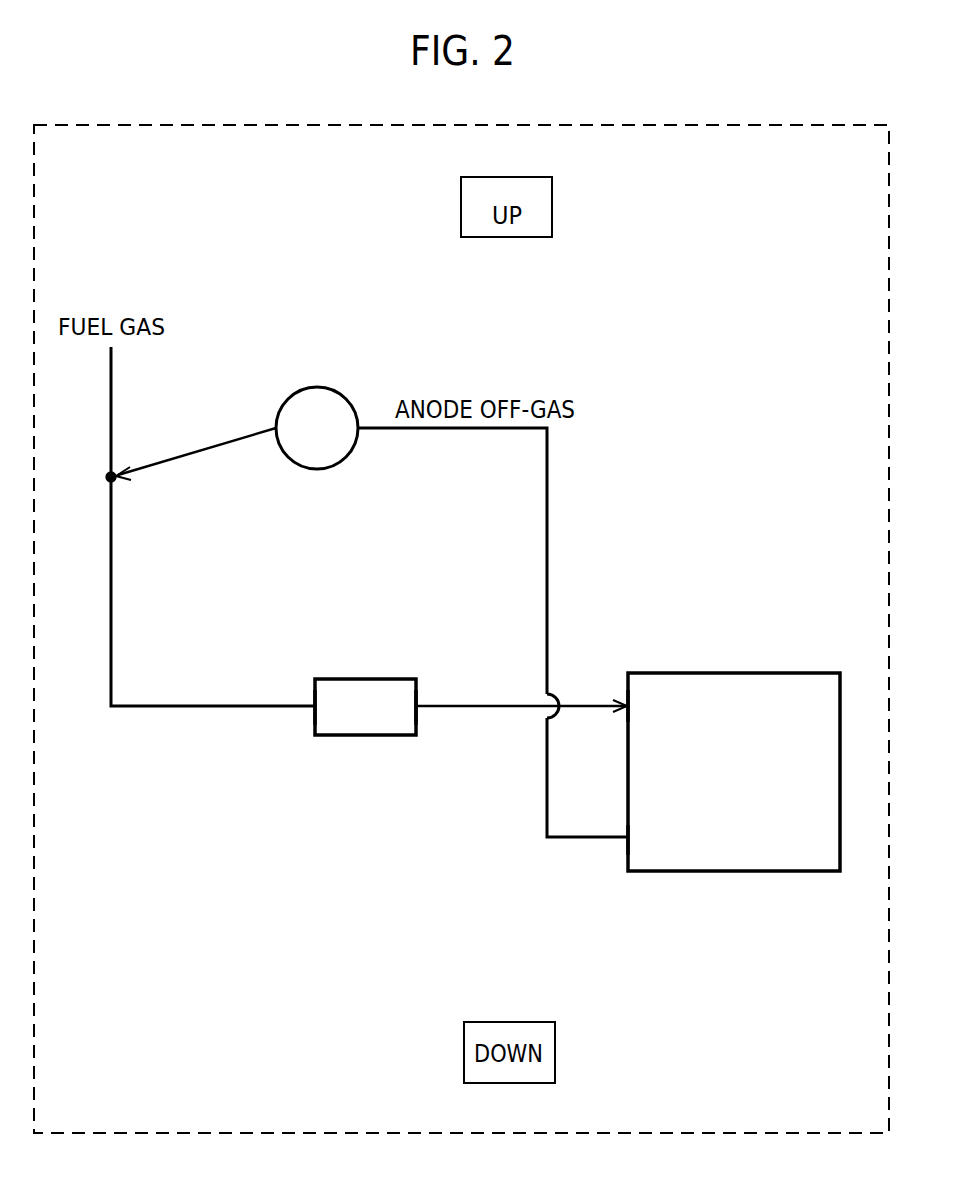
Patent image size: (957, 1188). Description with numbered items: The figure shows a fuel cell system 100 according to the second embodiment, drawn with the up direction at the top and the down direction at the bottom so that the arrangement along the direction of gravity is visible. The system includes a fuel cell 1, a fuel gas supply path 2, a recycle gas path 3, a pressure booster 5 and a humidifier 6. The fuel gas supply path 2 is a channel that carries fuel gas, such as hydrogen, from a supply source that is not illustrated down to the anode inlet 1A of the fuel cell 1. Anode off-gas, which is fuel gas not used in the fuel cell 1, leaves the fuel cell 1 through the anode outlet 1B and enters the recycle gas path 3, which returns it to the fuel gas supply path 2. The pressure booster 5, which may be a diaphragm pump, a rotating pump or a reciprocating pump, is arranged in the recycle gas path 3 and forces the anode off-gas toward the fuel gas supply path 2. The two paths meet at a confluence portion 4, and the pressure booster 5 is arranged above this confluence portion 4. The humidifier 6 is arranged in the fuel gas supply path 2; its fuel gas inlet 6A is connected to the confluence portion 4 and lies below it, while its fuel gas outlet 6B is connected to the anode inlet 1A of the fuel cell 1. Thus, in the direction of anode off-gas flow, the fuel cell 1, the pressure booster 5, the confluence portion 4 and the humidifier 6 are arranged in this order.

The fuel cell system 100 is at (657, 318).
The fuel cell 1 is at (742, 792).
The anode inlet 1A is at (630, 706).
The anode outlet 1B is at (629, 838).
The fuel gas supply path 2 is at (205, 708).
The recycle gas path 3 is at (375, 427).
The confluence portion 4 is at (107, 479).
The pressure booster 5 is at (326, 443).
The humidifier 6 is at (372, 722).
The fuel gas inlet 6A is at (313, 705).
The fuel gas outlet 6B is at (418, 705).